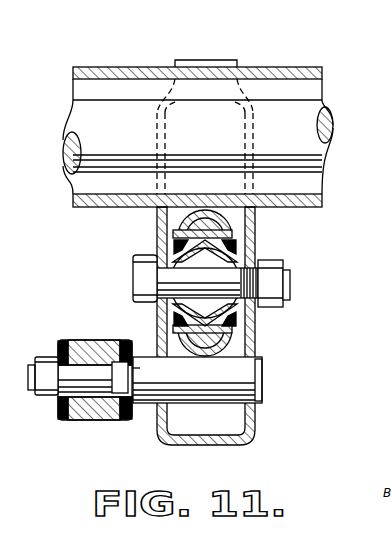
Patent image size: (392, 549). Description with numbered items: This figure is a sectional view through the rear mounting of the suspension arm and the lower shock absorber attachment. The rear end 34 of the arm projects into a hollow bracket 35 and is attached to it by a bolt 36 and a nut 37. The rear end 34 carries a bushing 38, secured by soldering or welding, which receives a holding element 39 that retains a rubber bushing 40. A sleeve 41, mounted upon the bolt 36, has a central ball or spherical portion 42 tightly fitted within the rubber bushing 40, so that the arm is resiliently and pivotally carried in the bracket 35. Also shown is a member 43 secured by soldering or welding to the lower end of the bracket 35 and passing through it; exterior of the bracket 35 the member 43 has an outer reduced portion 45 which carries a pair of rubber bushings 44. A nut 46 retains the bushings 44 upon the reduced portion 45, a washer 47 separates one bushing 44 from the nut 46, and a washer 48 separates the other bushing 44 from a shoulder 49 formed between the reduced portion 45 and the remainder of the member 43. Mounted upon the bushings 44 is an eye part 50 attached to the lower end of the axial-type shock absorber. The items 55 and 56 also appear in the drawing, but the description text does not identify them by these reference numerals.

The rear end 34 is at (256, 211).
The hollow bracket 35 is at (258, 432).
The bolt 36 is at (252, 265).
The nut 37 is at (273, 308).
The bushing 38 is at (258, 348).
The holding element 39 is at (180, 318).
The rubber bushing 40 is at (176, 313).
The sleeve 41 is at (162, 257).
The central ball or spherical portion 42 is at (207, 258).
The member 43 is at (262, 378).
The rubber bushings 44 is at (65, 420).
The outer reduced portion 45 is at (72, 373).
The nut 46 is at (50, 403).
The washer 47 is at (60, 350).
The washer 48 is at (127, 412).
The shoulder 49 is at (132, 385).
The eye part 50 is at (80, 420).
The tab 55 is at (280, 67).
The pipe 56 is at (310, 133).